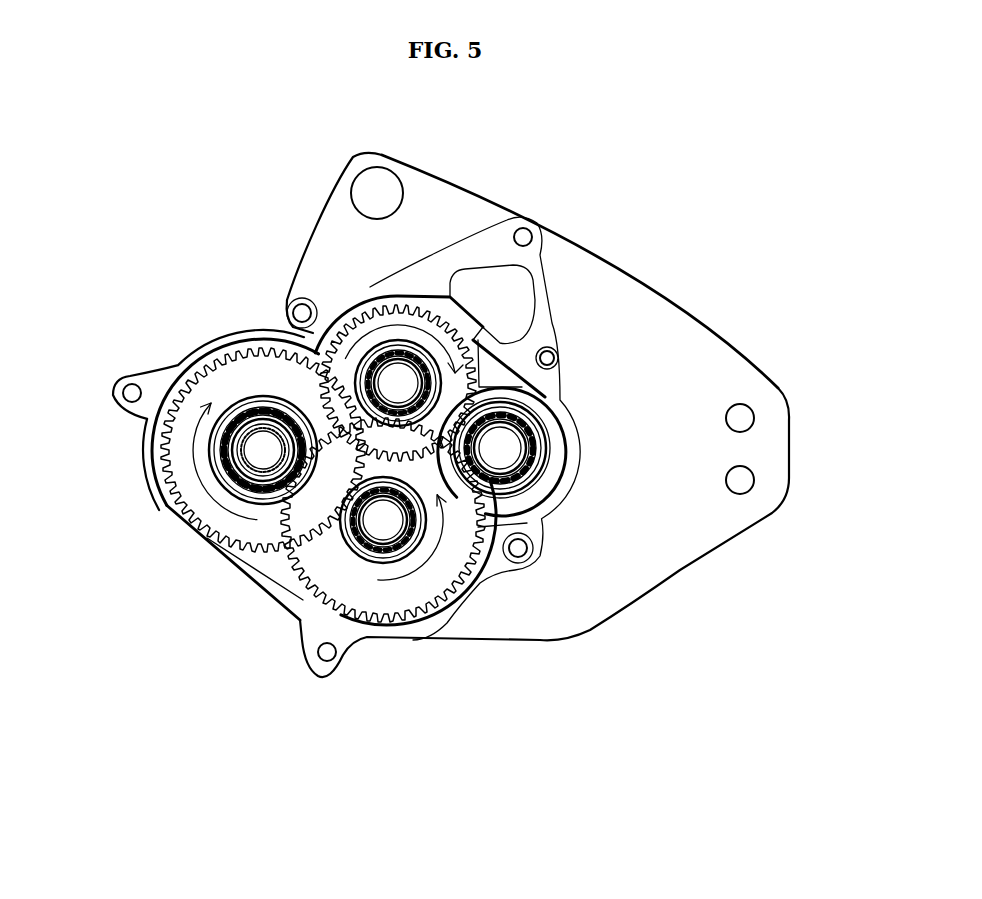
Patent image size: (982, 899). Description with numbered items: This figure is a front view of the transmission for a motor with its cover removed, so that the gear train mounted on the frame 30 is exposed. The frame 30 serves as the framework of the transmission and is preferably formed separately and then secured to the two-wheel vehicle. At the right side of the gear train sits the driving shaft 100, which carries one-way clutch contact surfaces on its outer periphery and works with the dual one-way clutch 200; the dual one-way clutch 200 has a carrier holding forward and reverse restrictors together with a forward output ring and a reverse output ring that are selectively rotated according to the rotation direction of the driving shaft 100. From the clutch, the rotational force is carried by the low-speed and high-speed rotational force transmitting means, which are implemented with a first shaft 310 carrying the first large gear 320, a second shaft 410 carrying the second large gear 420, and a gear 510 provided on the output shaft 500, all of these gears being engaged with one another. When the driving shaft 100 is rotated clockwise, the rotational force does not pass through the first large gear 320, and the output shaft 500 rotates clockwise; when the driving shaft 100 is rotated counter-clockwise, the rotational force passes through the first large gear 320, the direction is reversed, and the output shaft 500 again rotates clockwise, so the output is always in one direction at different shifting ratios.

The frame 30 is at (700, 540).
The driving shaft 100 is at (500, 448).
The dual one-way clutch 200 is at (550, 390).
The first shaft 310 is at (398, 383).
The first large gear 320 is at (403, 322).
The second shaft 410 is at (383, 520).
The second large gear 420 is at (322, 560).
The output shaft 500 is at (263, 450).
The gear 510 is at (235, 382).